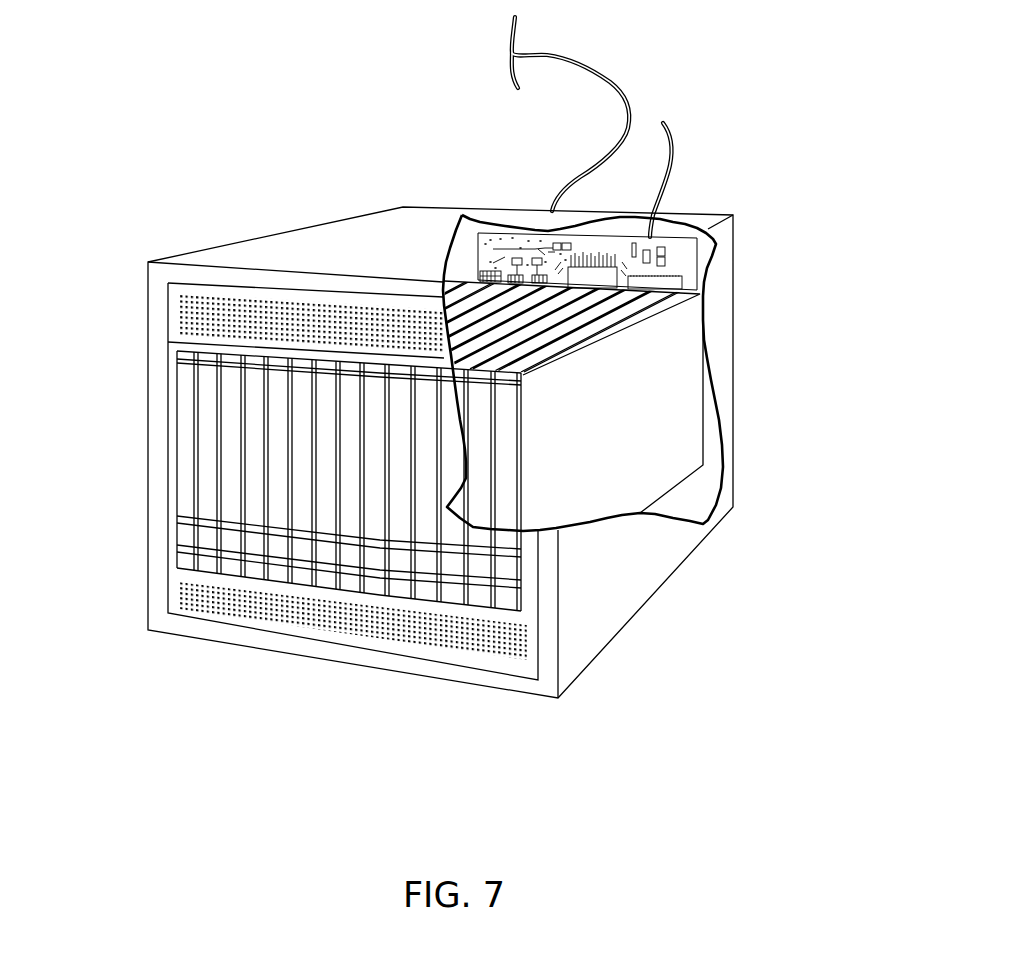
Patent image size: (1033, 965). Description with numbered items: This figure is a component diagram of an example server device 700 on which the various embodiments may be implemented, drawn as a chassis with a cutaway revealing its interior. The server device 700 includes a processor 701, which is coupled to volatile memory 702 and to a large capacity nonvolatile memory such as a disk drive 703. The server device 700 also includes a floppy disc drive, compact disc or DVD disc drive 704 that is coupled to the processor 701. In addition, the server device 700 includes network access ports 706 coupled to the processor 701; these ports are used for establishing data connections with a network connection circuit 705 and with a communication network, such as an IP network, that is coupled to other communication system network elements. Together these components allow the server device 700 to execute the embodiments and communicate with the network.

The server device 700 is at (152, 165).
The processor 701 is at (572, 268).
The volatile memory 702 is at (683, 288).
The disk drive 703 is at (233, 410).
The disc drive 704 is at (208, 475).
The network connection circuit 705 is at (488, 274).
The network access ports 706 is at (602, 73).